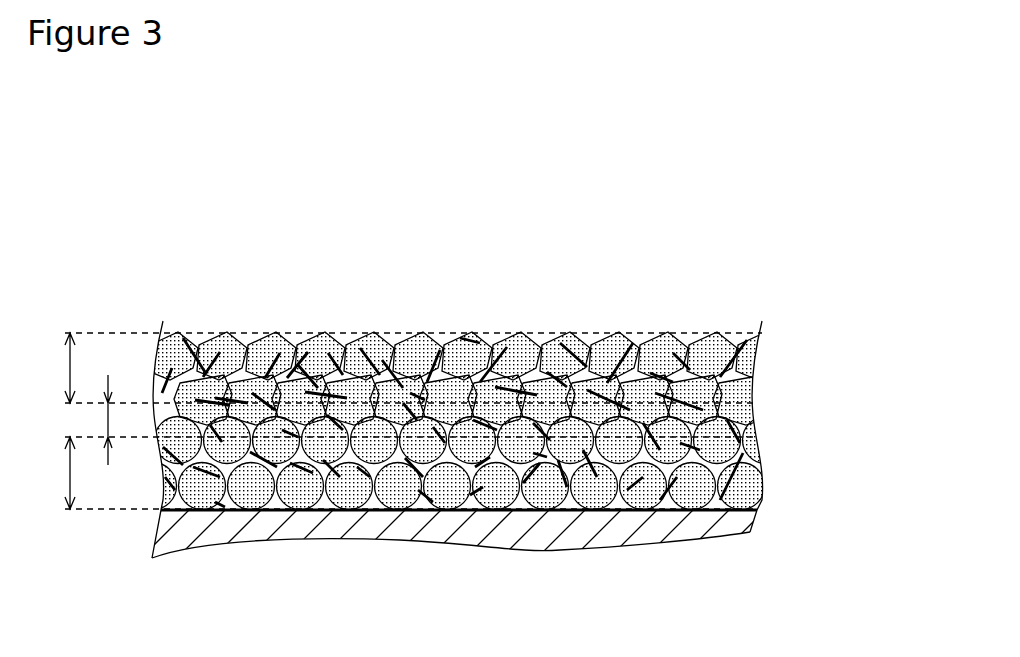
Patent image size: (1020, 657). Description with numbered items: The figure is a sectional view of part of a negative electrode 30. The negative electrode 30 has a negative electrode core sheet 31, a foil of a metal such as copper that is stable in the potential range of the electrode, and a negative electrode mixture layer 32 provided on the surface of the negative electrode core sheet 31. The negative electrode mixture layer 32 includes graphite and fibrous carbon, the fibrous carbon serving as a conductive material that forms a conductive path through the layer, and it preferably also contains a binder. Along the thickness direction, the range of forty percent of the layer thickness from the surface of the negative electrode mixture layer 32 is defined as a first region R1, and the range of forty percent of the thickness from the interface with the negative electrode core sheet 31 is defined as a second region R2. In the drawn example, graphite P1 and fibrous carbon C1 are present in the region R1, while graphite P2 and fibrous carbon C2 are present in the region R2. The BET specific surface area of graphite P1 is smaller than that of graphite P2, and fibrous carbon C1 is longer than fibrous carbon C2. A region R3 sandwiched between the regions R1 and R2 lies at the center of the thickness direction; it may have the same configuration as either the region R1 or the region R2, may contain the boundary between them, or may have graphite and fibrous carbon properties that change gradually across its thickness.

The negative electrode 30 is at (803, 288).
The negative electrode core sheet 31 is at (502, 538).
The negative electrode mixture layer 32 is at (758, 421).
The graphite P1 is at (234, 333).
The fibrous carbon C1 is at (388, 333).
The graphite P2 is at (245, 497).
The fibrous carbon C2 is at (336, 478).
The first region R1 is at (400, 368).
The second region R2 is at (397, 473).
The region R3 is at (108, 418).